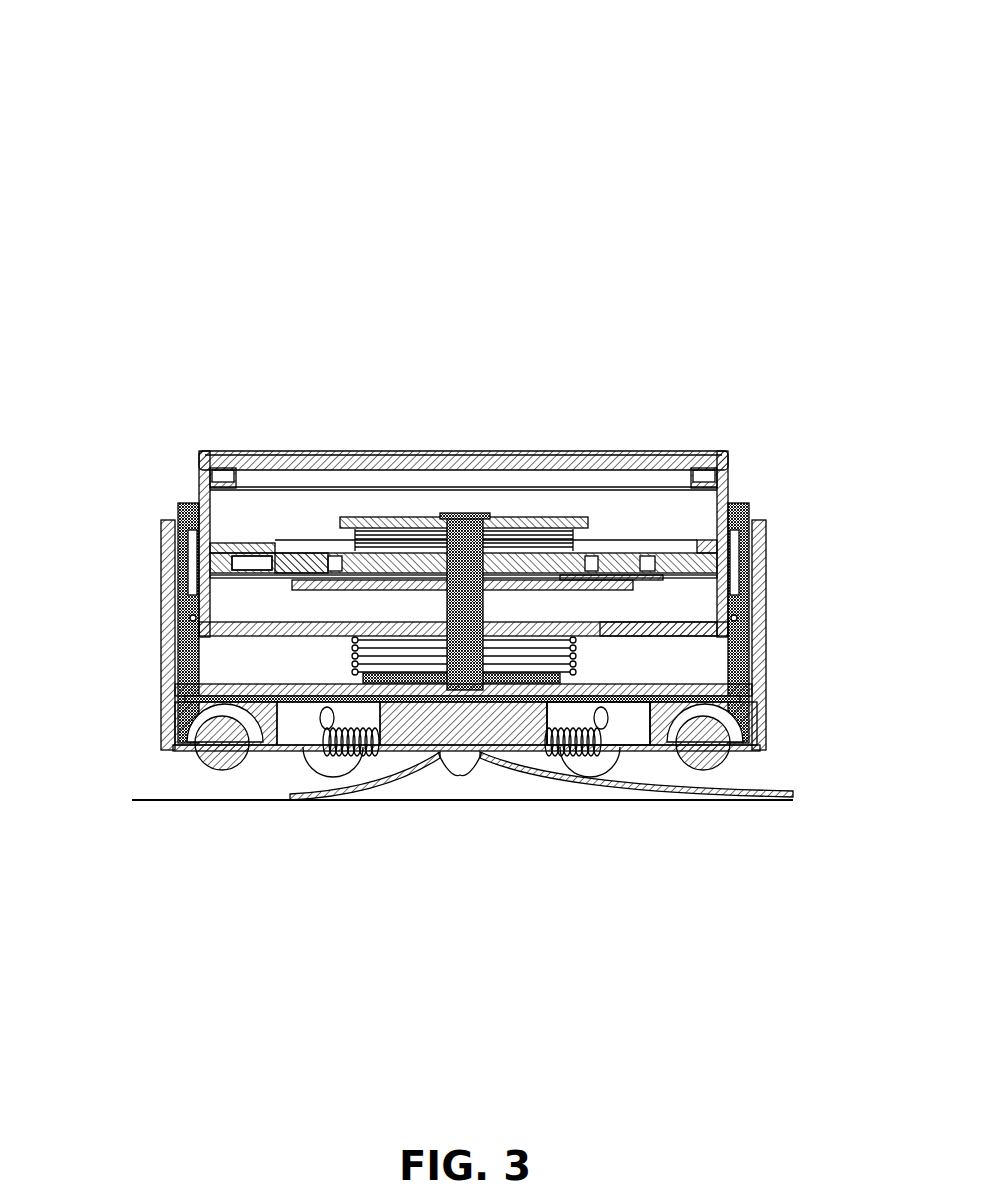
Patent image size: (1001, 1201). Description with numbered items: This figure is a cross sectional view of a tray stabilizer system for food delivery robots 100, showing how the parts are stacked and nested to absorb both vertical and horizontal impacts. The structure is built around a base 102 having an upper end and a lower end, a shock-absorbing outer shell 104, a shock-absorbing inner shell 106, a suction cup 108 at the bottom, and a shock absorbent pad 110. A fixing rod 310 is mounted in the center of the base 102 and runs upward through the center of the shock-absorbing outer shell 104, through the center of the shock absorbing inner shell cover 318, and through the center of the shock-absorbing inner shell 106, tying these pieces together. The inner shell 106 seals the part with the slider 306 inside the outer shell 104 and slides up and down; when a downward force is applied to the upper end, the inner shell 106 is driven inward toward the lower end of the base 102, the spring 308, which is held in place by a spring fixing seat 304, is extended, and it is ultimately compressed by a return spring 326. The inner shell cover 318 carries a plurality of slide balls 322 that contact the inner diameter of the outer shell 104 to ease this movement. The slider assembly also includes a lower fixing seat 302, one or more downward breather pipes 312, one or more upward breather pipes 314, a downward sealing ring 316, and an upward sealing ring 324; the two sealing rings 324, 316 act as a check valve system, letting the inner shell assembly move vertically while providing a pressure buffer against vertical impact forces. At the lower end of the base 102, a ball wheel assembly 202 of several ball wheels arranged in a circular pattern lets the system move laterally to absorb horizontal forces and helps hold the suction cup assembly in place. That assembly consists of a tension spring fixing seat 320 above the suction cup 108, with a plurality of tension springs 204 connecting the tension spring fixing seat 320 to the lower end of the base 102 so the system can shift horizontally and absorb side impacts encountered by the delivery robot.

The tray stabilizer system for food delivery robots 100 is at (253, 165).
The base 102 is at (770, 535).
The shock-absorbing outer shell 104 is at (752, 497).
The shock-absorbing inner shell 106 is at (735, 453).
The suction cup 108 is at (513, 797).
The shock absorbent pad 110 is at (583, 447).
The ball wheel assembly 202 is at (217, 755).
The tension springs 204 is at (322, 760).
The lower fixing seat 302 is at (623, 622).
The spring fixing seat 304 is at (510, 515).
The slider 306 is at (720, 553).
The spring 308 is at (315, 553).
The fixing rod 310 is at (460, 513).
The downward breather pipes 312 is at (268, 562).
The upward breather pipes 314 is at (345, 538).
The downward sealing ring 316 is at (600, 540).
The shock absorbing inner shell cover 318 is at (586, 593).
The tension spring fixing seat 320 is at (455, 755).
The slide balls 322 is at (188, 624).
The upward sealing ring 324 is at (268, 578).
The return spring 326 is at (163, 708).